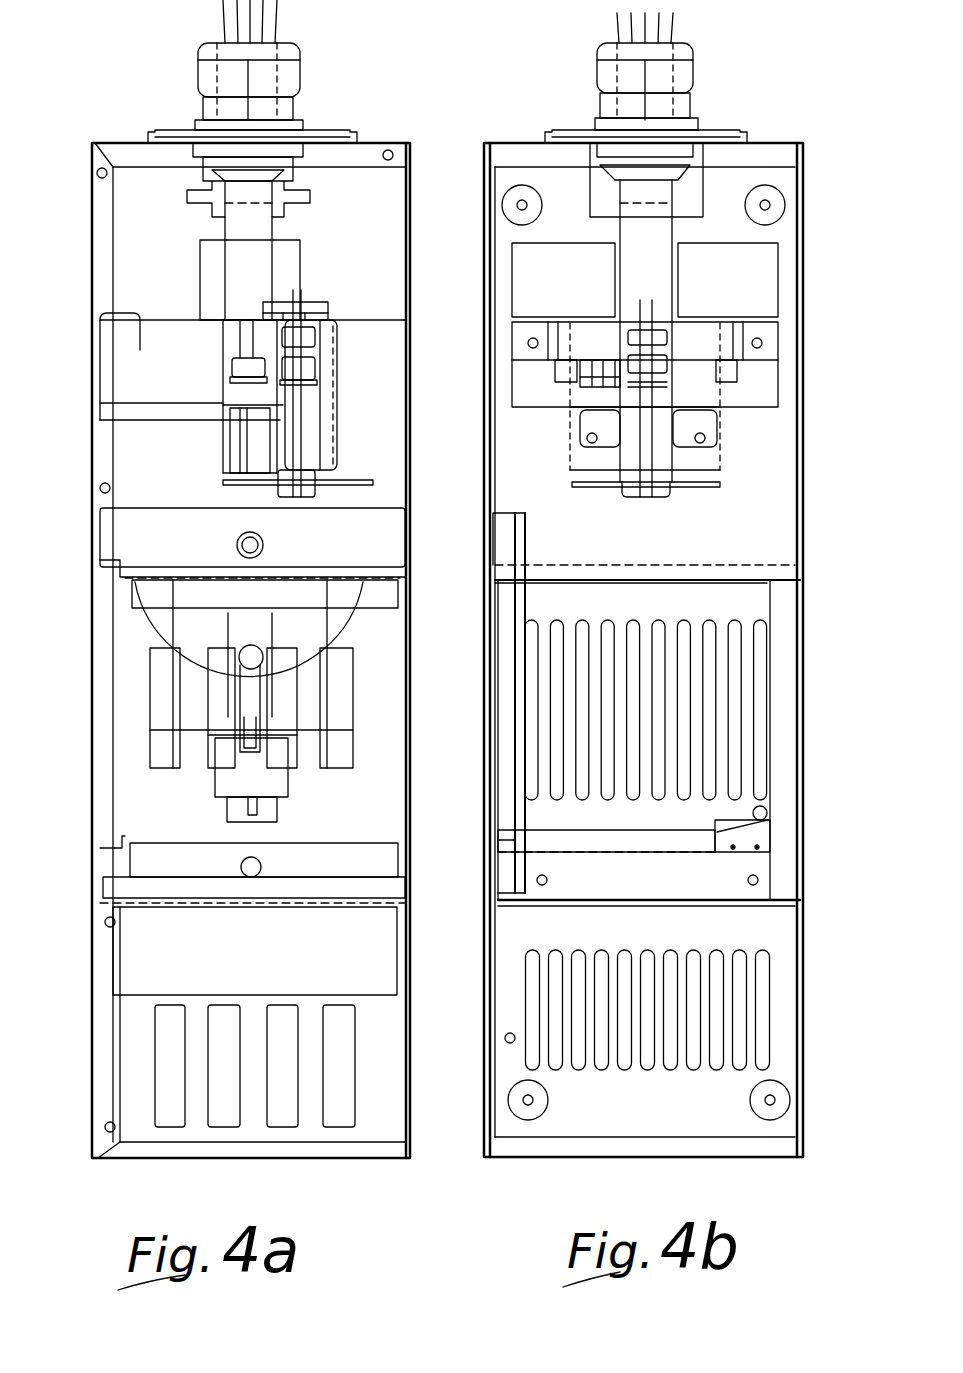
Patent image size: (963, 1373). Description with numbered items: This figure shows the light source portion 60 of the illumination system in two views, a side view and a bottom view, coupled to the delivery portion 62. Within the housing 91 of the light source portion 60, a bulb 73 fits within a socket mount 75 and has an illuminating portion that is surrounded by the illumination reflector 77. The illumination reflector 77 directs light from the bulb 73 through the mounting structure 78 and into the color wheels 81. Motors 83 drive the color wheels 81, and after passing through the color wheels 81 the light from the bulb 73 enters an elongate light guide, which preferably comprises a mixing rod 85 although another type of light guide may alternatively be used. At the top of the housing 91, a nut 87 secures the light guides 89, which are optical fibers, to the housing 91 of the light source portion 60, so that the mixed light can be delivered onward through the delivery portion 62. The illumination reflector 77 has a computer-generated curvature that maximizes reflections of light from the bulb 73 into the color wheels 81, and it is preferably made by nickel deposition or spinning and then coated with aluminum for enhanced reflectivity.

In FIG. 4A, the light source portion 60 is at (65, 298).
In FIG. 4A, the delivery portion 62 is at (128, 28).
In FIG. 4A, the light guides 89 is at (277, 22).
In FIG. 4A, the illumination reflector 77 is at (140, 635).
In FIG. 4A, the bulb 73 is at (246, 668).
In FIG. 4A, the socket mount 75 is at (215, 780).
In FIG. 4B, the housing 91 is at (803, 787).
In FIG. 4B, the nut 87 is at (683, 82).
In FIG. 4B, the mixing rod 85 is at (655, 240).
In FIG. 4B, the motors 83 is at (597, 277).
In FIG. 4B, the color wheels 81 is at (805, 318).
In FIG. 4B, the mounting structure 78 is at (710, 460).